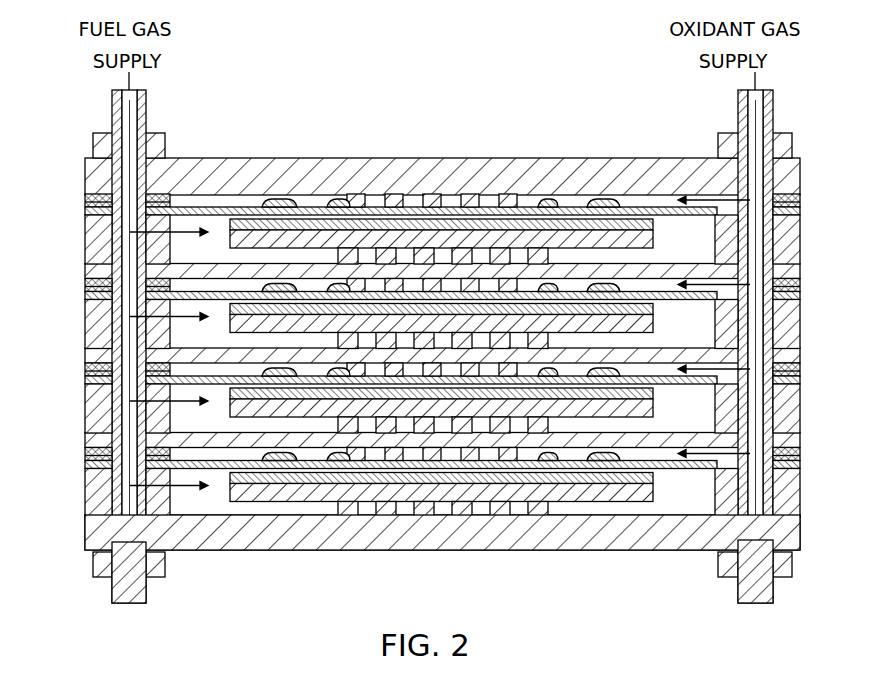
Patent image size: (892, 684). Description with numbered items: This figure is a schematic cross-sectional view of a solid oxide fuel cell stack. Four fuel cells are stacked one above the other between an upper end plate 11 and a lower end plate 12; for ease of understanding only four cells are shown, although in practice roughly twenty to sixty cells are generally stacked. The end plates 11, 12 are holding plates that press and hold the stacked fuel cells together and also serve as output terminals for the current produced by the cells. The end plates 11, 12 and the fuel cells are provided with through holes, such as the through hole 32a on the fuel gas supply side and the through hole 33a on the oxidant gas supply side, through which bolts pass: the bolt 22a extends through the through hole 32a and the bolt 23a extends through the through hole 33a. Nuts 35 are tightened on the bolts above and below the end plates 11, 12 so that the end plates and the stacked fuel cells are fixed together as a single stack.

The end plate 11 is at (85, 175).
The end plate 12 is at (85, 528).
The bolt 22a is at (112, 98).
The through hole 32a is at (146, 98).
The bolt 23a is at (773, 98).
The through hole 33a is at (738, 98).
The nut 35 is at (93, 141).